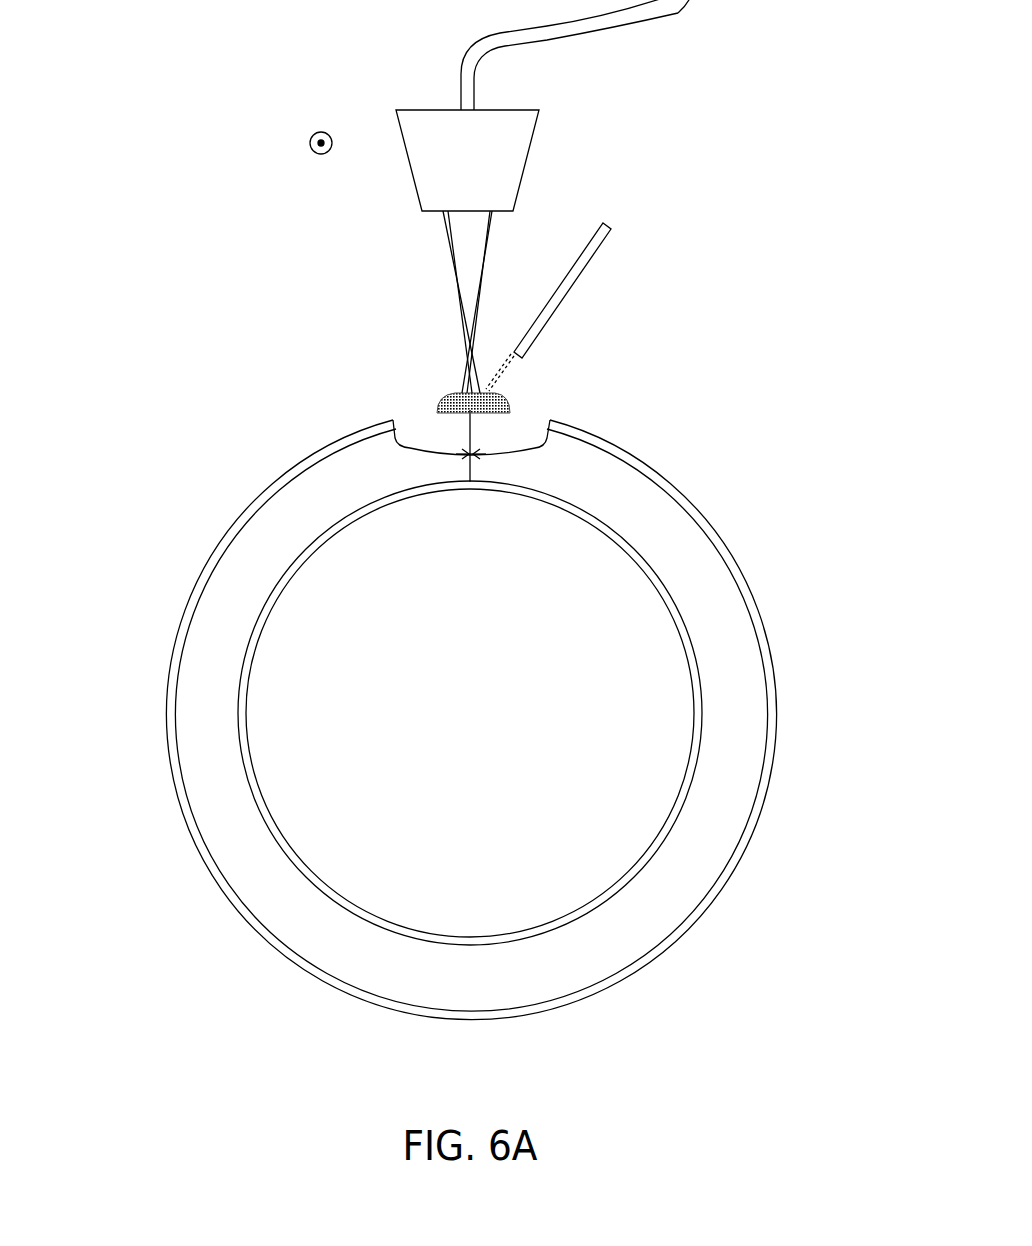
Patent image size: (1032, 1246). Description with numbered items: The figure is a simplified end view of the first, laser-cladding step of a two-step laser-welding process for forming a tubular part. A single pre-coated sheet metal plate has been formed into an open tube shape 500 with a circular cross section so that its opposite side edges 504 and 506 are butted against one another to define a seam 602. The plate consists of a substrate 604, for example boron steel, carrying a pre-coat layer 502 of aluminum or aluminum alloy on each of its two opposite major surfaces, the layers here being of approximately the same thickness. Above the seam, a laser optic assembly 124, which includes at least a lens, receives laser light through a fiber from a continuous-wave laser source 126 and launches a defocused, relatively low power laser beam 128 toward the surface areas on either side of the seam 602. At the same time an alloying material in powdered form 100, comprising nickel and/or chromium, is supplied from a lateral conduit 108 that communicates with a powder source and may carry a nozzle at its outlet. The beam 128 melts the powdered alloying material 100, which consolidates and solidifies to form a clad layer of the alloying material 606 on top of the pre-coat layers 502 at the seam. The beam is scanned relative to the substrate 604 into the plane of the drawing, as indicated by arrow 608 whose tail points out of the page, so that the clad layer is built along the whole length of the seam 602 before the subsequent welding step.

The alloying material in powdered form 100 is at (510, 372).
The lateral conduit 108 is at (570, 284).
The laser optic assembly 124 is at (492, 167).
The laser source 126 is at (658, 13).
The laser beam 128 is at (463, 308).
The open tube shape 500 is at (745, 488).
The pre-coat layer 502 is at (318, 976).
The first side edge 504 is at (393, 421).
The second side edge 506 is at (555, 423).
The seam 602 is at (470, 499).
The substrate 604 is at (230, 570).
The clad layer of the alloying material 606 is at (440, 405).
The arrow 608 is at (307, 152).